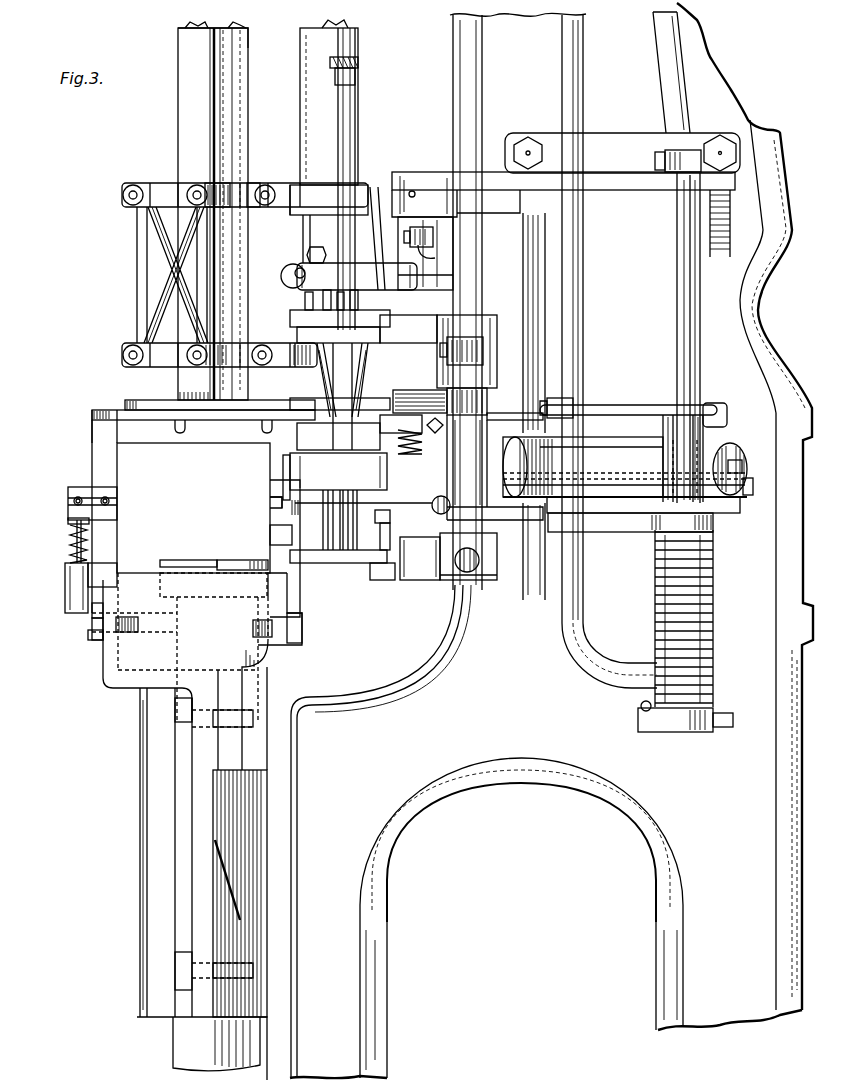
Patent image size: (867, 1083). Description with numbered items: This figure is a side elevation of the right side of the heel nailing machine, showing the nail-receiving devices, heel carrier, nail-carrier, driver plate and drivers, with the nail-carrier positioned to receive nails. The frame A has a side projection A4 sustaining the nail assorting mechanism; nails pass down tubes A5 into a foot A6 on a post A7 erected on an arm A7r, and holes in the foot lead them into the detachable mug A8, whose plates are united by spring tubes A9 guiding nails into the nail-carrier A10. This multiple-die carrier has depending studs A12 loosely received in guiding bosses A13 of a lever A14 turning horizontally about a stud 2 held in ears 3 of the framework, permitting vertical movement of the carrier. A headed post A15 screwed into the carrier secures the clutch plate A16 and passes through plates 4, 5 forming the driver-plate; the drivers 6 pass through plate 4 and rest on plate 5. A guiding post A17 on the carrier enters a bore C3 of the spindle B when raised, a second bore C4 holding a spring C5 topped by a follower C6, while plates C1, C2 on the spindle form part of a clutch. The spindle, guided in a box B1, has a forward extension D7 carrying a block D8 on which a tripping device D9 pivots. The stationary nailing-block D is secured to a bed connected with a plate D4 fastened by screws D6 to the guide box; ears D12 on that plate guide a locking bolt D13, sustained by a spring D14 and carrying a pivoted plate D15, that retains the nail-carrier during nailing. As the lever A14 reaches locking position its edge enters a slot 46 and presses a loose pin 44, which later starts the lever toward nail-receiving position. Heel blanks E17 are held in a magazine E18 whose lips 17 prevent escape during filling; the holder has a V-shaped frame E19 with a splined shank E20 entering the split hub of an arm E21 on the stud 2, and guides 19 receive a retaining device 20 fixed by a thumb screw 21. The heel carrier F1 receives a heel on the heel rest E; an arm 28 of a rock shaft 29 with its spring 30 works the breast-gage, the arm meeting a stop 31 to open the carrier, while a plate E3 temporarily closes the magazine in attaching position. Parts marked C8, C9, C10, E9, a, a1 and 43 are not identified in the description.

The frame A is at (588, 33).
The projection A4 is at (630, 155).
The tubes or guideways A5 is at (374, 185).
The foot A6 is at (286, 326).
The post A7 is at (490, 395).
The arm A7r is at (497, 572).
The mug A8 is at (352, 400).
The tubes A9 is at (278, 368).
The nail-carrier A10 is at (283, 470).
The studs A12 is at (270, 536).
The guiding bosses A13 is at (270, 513).
The lever A14 is at (447, 498).
The post A15 is at (348, 560).
The clutch plate A16 is at (380, 572).
The guiding post A17 is at (338, 471).
The spindle B is at (183, 1040).
The box B1 is at (147, 748).
The plate C1 is at (740, 508).
The plate C2 is at (222, 556).
The bore C3 is at (705, 560).
The bore C4 is at (618, 406).
The spring C5 is at (690, 418).
The follower C6 is at (628, 467).
The arm C8 is at (610, 449).
The connector C9 is at (580, 402).
The block C10 is at (497, 556).
The nailing-block D is at (100, 460).
The plate D4 is at (108, 448).
The screws D6 is at (312, 606).
The horizontal forward extension D7 is at (88, 636).
The block D8 is at (92, 608).
The tripping device D9 is at (92, 625).
The ears D12 is at (55, 565).
The locking device D13 is at (68, 522).
The spring D14 is at (70, 540).
The plate D15 is at (65, 585).
The heel rest E is at (218, 417).
The plate E3 is at (160, 399).
The cylinder E9 is at (357, 95).
The heels E17 is at (185, 400).
The magazine E18 is at (135, 118).
The V-shaped frame E19 is at (372, 188).
The splined shank E20 is at (298, 178).
The arm E21 is at (437, 258).
The heel carrier F1 is at (437, 283).
The rod a is at (350, 118).
The nut a1 is at (358, 62).
The stud 2 is at (437, 292).
The ears 3 is at (410, 178).
The plate 4 is at (380, 520).
The plate 5 is at (381, 540).
The drivers 6 is at (330, 528).
The lips 17 is at (266, 14).
The guides 19 is at (185, 190).
The retaining device 20 is at (165, 198).
The thumb screw 21 is at (210, 182).
The arm 28 is at (340, 396).
The rock shaft 29 is at (412, 392).
The spring 30 is at (398, 442).
The stop 31 is at (380, 422).
The notch 43 is at (270, 503).
The loose pin 44 is at (110, 500).
The slot 46 is at (112, 505).